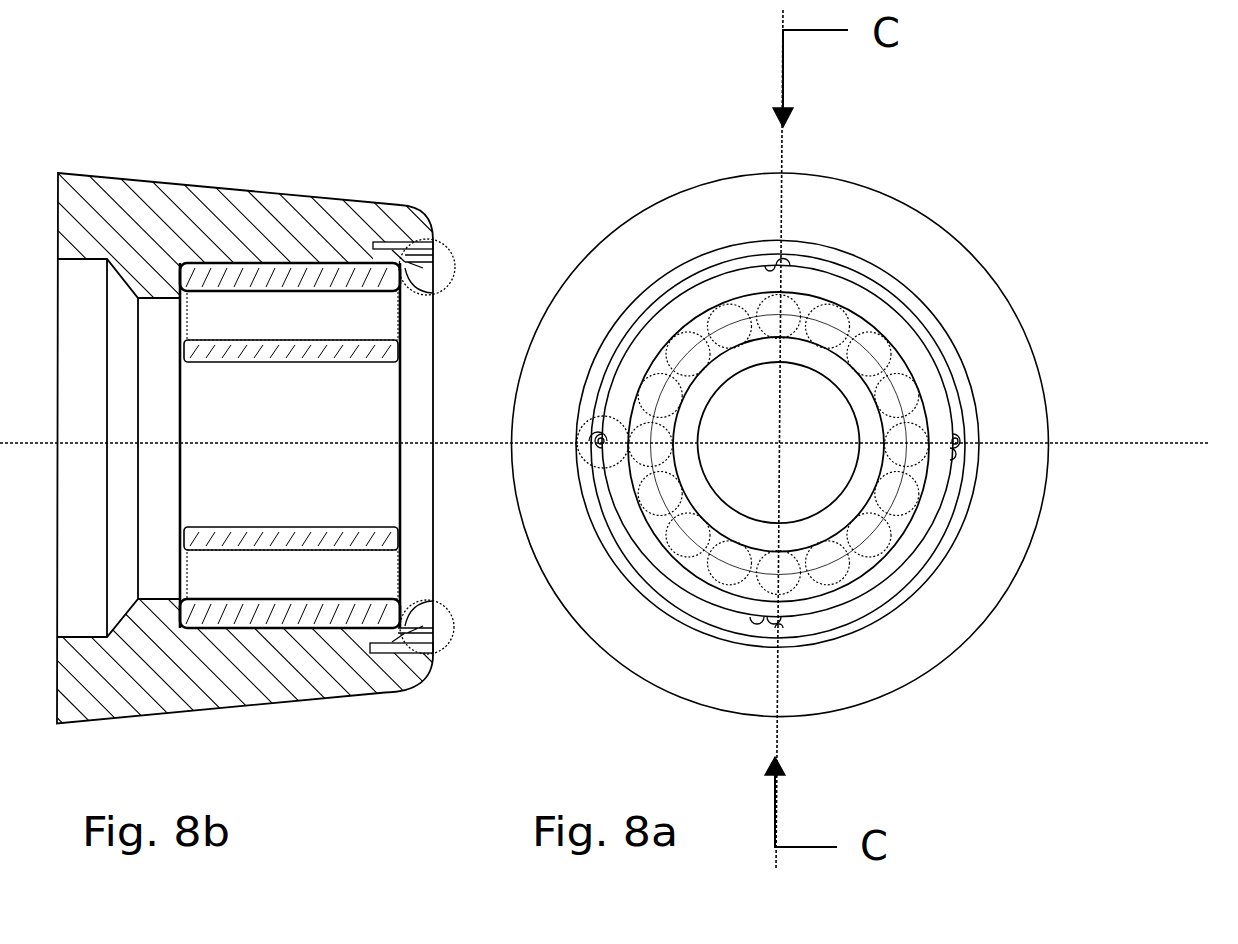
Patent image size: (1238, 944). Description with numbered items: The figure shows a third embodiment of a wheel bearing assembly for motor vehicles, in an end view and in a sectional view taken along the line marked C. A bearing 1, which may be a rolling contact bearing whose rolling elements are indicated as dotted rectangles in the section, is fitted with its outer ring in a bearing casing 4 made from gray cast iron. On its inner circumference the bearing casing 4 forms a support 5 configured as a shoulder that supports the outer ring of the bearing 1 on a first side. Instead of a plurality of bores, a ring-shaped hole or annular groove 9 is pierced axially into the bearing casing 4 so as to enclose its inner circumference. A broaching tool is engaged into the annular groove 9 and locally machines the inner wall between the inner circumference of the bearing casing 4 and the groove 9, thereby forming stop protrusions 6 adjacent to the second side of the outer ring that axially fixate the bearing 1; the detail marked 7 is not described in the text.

In FIG. 8B, the bearing 1 is at (302, 576).
In FIG. 8A, the bearing 1 is at (835, 322).
In FIG. 8B, the bearing casing 4 is at (297, 229).
In FIG. 8A, the bearing casing 4 is at (882, 218).
In FIG. 8B, the support 5 is at (150, 272).
In FIG. 8B, the stop protrusions 6 is at (438, 291).
In FIG. 8A, the stop protrusions 6 is at (770, 262).
In FIG. 8B, the sealing lip 7 is at (440, 296).
In FIG. 8A, the sealing lip 7 is at (572, 460).
In FIG. 8B, the annular groove 9 is at (420, 248).
In FIG. 8A, the annular groove 9 is at (930, 570).